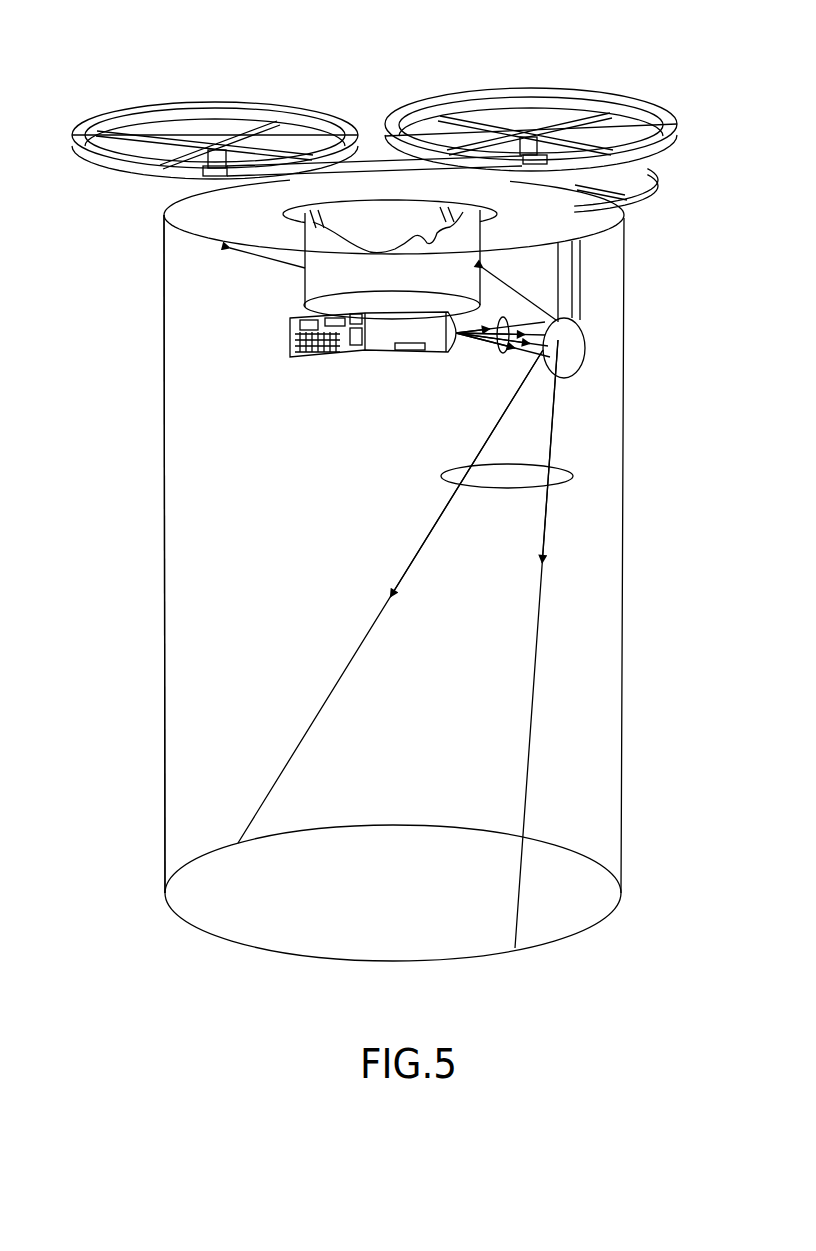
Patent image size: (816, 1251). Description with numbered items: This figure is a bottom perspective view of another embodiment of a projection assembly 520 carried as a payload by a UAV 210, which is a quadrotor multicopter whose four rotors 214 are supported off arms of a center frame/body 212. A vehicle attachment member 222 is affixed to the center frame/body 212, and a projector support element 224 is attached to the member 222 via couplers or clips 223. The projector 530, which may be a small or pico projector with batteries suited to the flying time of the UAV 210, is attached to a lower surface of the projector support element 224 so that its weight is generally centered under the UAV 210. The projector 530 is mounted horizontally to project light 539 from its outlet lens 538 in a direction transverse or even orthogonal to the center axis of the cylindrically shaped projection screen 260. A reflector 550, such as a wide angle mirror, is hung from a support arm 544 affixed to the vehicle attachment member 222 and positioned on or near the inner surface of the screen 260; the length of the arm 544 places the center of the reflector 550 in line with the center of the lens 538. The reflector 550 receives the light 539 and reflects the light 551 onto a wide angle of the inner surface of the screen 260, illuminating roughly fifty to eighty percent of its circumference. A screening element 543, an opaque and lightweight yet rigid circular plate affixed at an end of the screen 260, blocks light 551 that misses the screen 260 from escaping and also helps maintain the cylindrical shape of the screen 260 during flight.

The UAV 210 is at (540, 62).
The center frame/body 212 is at (372, 130).
The rotors 214 is at (672, 137).
The vehicle attachment member 222 is at (623, 218).
The couplers or clips 223 is at (393, 263).
The projector support element 224 is at (452, 290).
The projection screen 260 is at (160, 589).
The projection assembly 520 is at (133, 915).
The projector 530 is at (350, 372).
The outlet lens 538 is at (455, 350).
The light 539 is at (497, 357).
The screening element 543 is at (313, 958).
The support arm 544 is at (580, 280).
The reflector 550 is at (577, 383).
The reflected light 551 is at (443, 477).